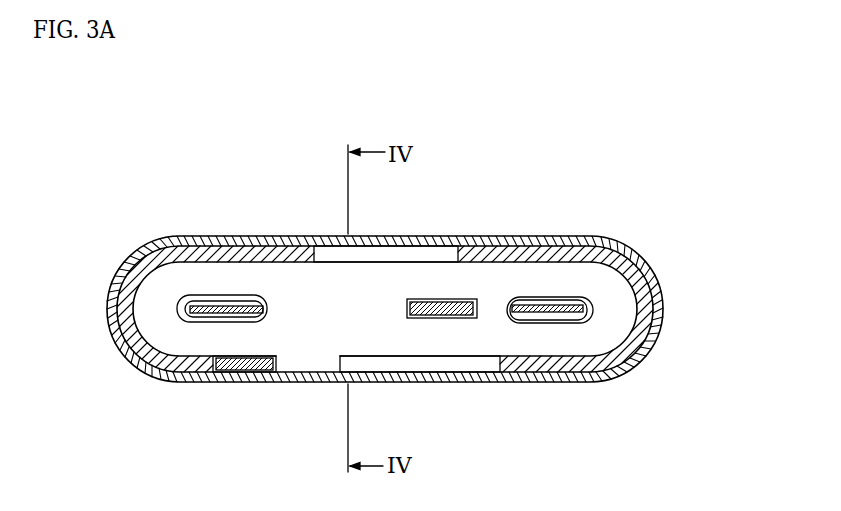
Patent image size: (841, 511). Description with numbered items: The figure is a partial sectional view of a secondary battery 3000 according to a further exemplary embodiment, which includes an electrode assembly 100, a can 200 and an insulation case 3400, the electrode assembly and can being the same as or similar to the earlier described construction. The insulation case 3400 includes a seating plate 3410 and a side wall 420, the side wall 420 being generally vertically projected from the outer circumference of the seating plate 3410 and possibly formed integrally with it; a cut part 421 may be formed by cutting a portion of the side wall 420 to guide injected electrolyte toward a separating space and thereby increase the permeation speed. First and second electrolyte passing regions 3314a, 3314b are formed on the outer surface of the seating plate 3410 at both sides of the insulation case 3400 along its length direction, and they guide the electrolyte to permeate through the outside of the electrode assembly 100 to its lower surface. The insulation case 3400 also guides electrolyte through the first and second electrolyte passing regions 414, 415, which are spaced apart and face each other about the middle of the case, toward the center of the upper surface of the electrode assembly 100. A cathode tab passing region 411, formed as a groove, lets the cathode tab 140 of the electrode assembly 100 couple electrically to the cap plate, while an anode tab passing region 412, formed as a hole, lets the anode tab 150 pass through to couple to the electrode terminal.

The secondary battery 3000 is at (102, 141).
The insulation case 3400 is at (648, 254).
The can 200 is at (613, 247).
The seating plate 3410 is at (292, 277).
The side wall 420 is at (501, 250).
The cut part 421 is at (312, 379).
The first electrolyte passing region 3314a is at (408, 260).
The second electrolyte passing region 3314b is at (407, 363).
The cathode tab passing region 411 is at (268, 373).
The cathode tab 140 is at (229, 373).
The first electrolyte passing region 414 is at (219, 296).
The second electrolyte passing region 415 is at (550, 297).
The electrode assembly 100 is at (596, 306).
The anode tab passing region 412 is at (472, 318).
The anode tab 150 is at (445, 318).